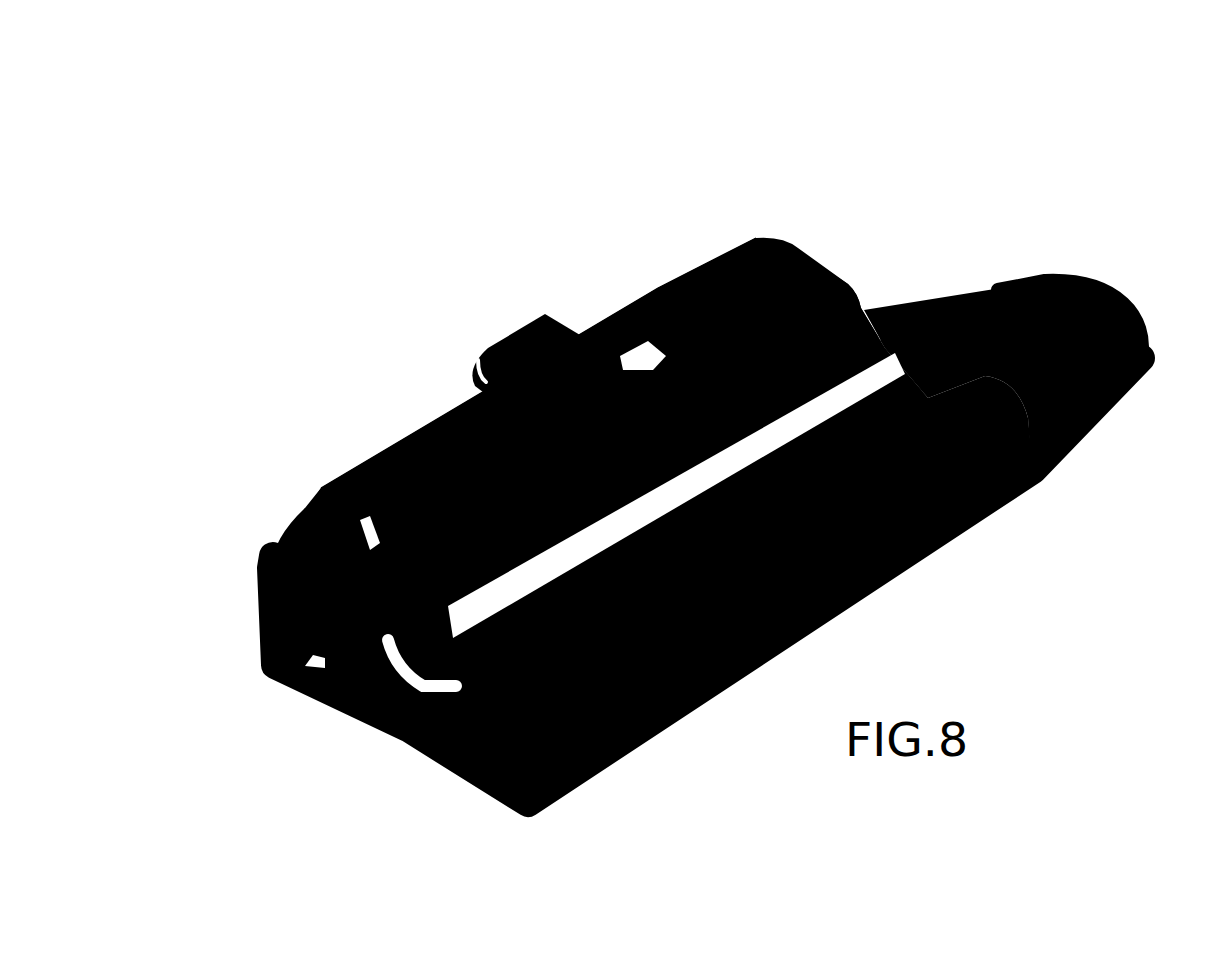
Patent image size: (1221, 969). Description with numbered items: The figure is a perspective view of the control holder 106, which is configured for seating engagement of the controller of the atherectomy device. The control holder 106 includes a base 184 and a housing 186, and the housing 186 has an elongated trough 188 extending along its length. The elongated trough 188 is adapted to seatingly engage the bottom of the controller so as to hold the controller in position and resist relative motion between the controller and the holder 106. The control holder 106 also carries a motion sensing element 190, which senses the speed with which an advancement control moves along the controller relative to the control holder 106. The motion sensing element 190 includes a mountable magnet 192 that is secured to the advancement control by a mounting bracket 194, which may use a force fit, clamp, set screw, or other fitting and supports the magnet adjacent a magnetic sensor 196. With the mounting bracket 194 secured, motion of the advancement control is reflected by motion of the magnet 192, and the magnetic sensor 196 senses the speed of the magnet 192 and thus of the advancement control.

The control holder 106 is at (992, 143).
The base 184 is at (1068, 440).
The housing 186 is at (263, 558).
The elongated trough 188 is at (850, 340).
The motion sensing element 190 is at (697, 215).
The mountable magnet 192 is at (533, 333).
The mounting bracket 194 is at (657, 327).
The magnetic sensor 196 is at (413, 450).